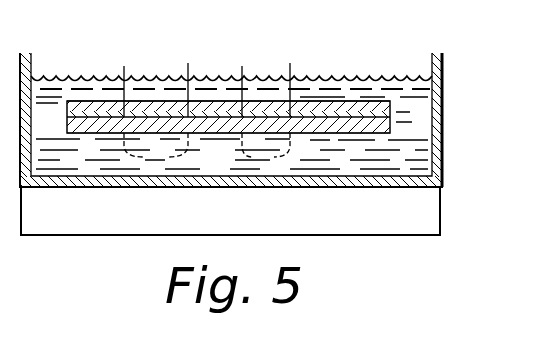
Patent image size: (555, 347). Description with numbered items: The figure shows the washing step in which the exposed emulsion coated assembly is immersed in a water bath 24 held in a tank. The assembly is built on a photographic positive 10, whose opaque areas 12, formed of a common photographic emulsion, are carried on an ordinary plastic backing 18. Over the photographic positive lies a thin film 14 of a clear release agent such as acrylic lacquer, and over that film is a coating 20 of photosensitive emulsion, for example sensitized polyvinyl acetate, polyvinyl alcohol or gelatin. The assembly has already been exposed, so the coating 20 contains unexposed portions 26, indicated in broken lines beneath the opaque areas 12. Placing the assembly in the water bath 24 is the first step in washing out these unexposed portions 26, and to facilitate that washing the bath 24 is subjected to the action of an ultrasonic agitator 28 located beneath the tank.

The photographic positive 10 is at (334, 92).
The opaque area 12 is at (188, 63).
The thin film of release agent 14 is at (432, 127).
The plastic backing 18 is at (70, 101).
The coating of photosensitive emulsion 20 is at (67, 120).
The water bath 24 is at (446, 60).
The unexposed portion 26 is at (207, 150).
The ultrasonic agitator 28 is at (370, 235).